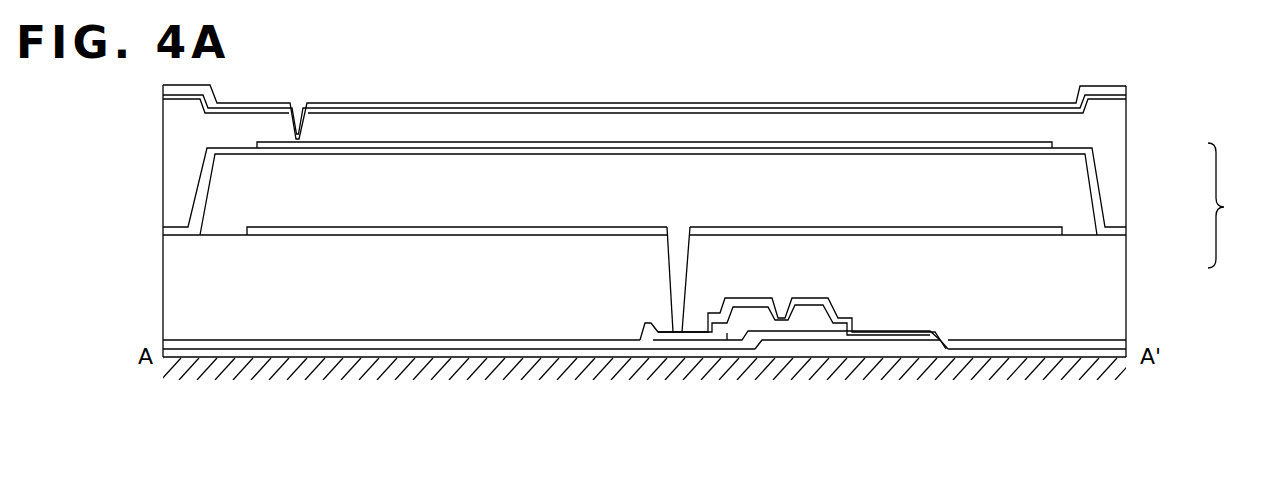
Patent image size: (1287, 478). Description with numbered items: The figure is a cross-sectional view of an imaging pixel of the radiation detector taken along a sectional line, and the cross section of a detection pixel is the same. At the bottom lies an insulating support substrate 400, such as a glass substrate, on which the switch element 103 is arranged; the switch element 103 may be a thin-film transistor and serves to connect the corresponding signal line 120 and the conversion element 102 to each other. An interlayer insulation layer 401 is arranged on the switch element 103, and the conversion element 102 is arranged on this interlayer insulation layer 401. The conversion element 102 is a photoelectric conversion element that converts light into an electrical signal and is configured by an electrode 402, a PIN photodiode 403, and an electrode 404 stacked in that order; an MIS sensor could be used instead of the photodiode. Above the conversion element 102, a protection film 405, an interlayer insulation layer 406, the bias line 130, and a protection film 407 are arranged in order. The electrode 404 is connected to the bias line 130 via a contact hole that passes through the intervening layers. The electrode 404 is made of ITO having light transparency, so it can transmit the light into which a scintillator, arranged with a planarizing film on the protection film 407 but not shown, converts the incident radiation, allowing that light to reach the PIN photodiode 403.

The bias line 130 is at (1123, 112).
The protection film 407 is at (967, 102).
The interlayer insulation layer 406 is at (178, 137).
The protection film 405 is at (1043, 139).
The electrode 404 is at (1085, 153).
The PIN photodiode 403 is at (1077, 197).
The electrode 402 is at (1065, 240).
The interlayer insulation layer 401 is at (182, 258).
The conversion element 102 is at (1240, 205).
The switch element 103 is at (935, 385).
The signal line 120 is at (922, 347).
The insulating support substrate 400 is at (1072, 372).